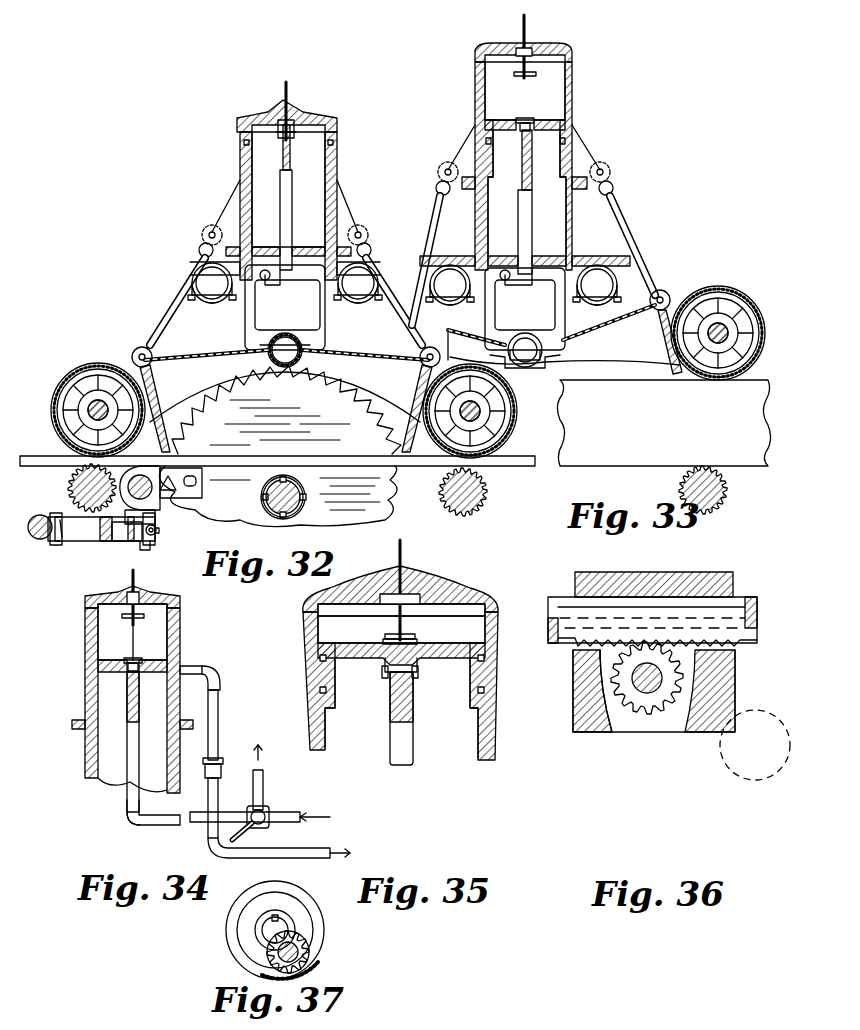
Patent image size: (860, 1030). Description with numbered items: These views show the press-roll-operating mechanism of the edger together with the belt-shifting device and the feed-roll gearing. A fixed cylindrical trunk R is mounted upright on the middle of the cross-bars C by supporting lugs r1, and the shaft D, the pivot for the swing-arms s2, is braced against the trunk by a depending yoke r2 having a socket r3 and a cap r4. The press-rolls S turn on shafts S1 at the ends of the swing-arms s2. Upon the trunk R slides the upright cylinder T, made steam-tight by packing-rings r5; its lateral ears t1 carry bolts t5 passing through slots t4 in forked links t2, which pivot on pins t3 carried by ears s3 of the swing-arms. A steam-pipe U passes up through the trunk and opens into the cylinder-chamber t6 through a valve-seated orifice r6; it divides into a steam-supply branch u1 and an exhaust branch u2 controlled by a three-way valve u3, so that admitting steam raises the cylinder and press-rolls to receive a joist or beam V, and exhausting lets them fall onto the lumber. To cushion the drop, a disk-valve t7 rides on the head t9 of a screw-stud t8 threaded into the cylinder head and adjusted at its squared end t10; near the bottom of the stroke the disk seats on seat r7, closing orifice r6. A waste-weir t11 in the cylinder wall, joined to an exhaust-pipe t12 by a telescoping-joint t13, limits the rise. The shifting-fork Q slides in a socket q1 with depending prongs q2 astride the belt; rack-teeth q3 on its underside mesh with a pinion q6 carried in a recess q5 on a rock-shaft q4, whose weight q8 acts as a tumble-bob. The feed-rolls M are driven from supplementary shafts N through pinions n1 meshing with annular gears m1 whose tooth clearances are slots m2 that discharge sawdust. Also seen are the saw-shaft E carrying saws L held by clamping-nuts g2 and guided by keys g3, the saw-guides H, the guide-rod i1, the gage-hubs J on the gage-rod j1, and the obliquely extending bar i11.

In FIG. 32, the upright cylinder T is at (332, 150).
In FIG. 33, the upright cylinder T is at (570, 98).
In FIG. 35, the upright cylinder T is at (462, 590).
In FIG. 32, the cylindrical trunk R is at (250, 228).
In FIG. 33, the cylindrical trunk R is at (532, 222).
In FIG. 35, the cylindrical trunk R is at (476, 748).
In FIG. 32, the steam-pipe U is at (292, 194).
In FIG. 33, the steam-pipe U is at (518, 195).
In FIG. 34, the steam-pipe U is at (128, 748).
In FIG. 35, the steam-pipe U is at (412, 740).
In FIG. 32, the screw-stud t8 is at (290, 96).
In FIG. 33, the screw-stud t8 is at (530, 40).
In FIG. 34, the screw-stud t8 is at (138, 586).
In FIG. 35, the screw-stud t8 is at (396, 556).
In FIG. 32, the disk-valve t7 is at (275, 115).
In FIG. 33, the disk-valve t7 is at (516, 75).
In FIG. 34, the disk-valve t7 is at (142, 616).
In FIG. 35, the disk-valve t7 is at (380, 642).
In FIG. 33, the squared end t10 is at (522, 30).
In FIG. 34, the squared end t10 is at (130, 575).
In FIG. 33, the cylinder-chamber t6 is at (555, 82).
In FIG. 34, the cylinder-chamber t6 is at (165, 645).
In FIG. 35, the cylinder-chamber t6 is at (478, 630).
In FIG. 34, the head of the stud t9 is at (130, 622).
In FIG. 35, the head of the stud t9 is at (386, 665).
In FIG. 32, the packing-rings r5 is at (243, 140).
In FIG. 33, the packing-rings r5 is at (482, 140).
In FIG. 35, the packing-rings r5 is at (485, 690).
In FIG. 33, the seat r7 is at (518, 122).
In FIG. 34, the seat r7 is at (126, 660).
In FIG. 33, the valve-seated orifice r6 is at (527, 118).
In FIG. 34, the valve-seated orifice r6 is at (135, 665).
In FIG. 35, the valve-seated orifice r6 is at (412, 656).
In FIG. 32, the supporting lugs r1 is at (190, 268).
In FIG. 33, the supporting lugs r1 is at (448, 258).
In FIG. 32, the depending yoke r2 is at (322, 330).
In FIG. 33, the depending yoke r2 is at (486, 326).
In FIG. 32, the socket r3 is at (288, 332).
In FIG. 33, the socket r3 is at (510, 345).
In FIG. 33, the cap r4 is at (538, 368).
In FIG. 32, the lateral ears t1 is at (232, 210).
In FIG. 33, the lateral ears t1 is at (450, 162).
In FIG. 32, the bolts t5 is at (203, 230).
In FIG. 33, the bolts t5 is at (615, 170).
In FIG. 32, the slots t4 is at (200, 248).
In FIG. 33, the slots t4 is at (435, 188).
In FIG. 32, the forked links t2 is at (170, 306).
In FIG. 33, the forked links t2 is at (432, 226).
In FIG. 32, the pins t3 is at (146, 375).
In FIG. 33, the pins t3 is at (663, 295).
In FIG. 34, the waste-weir t11 is at (182, 672).
In FIG. 34, the exhaust-pipe t12 is at (222, 790).
In FIG. 34, the telescoping-joint t13 is at (218, 705).
In FIG. 32, the cross-bars C is at (200, 300).
In FIG. 33, the cross-bars C is at (432, 276).
In FIG. 32, the shaft D is at (285, 350).
In FIG. 33, the shaft D is at (524, 368).
In FIG. 32, the swing-arms s2 is at (190, 363).
In FIG. 33, the swing-arms s2 is at (455, 330).
In FIG. 32, the ears s3 is at (136, 352).
In FIG. 33, the ears s3 is at (670, 303).
In FIG. 32, the press-rolls S is at (90, 362).
In FIG. 33, the press-rolls S is at (752, 298).
In FIG. 32, the shafts S1 is at (88, 410).
In FIG. 33, the shafts S1 is at (735, 337).
In FIG. 32, the saws L is at (388, 435).
In FIG. 32, the feed-rolls M is at (70, 492).
In FIG. 33, the feed-rolls M is at (726, 508).
In FIG. 37, the feed-rolls M is at (285, 920).
In FIG. 32, the guide-rod i1 is at (140, 475).
In FIG. 32, the saw-guides H is at (170, 492).
In FIG. 32, the saw-shaft E is at (302, 508).
In FIG. 32, the keys g3 is at (306, 492).
In FIG. 32, the clamping-nut g2 is at (266, 510).
In FIG. 32, the gage-hubs J is at (58, 542).
In FIG. 32, the gage-rod j1 is at (35, 514).
In FIG. 32, the obliquely extending bar i11 is at (110, 542).
In FIG. 33, the joist or beam V is at (663, 423).
In FIG. 34, the steam-supply branch u1 is at (290, 822).
In FIG. 34, the exhaust-pipe branch u2 is at (262, 786).
In FIG. 34, the three-way valve u3 is at (251, 827).
In FIG. 36, the shifting-fork Q is at (565, 598).
In FIG. 36, the socket q1 is at (735, 585).
In FIG. 36, the depending prongs q2 is at (710, 700).
In FIG. 36, the rack-teeth q3 is at (740, 648).
In FIG. 36, the rock-shaft q4 is at (645, 690).
In FIG. 36, the recess q5 is at (605, 720).
In FIG. 36, the pinion q6 is at (655, 718).
In FIG. 36, the weight q8 is at (735, 782).
In FIG. 37, the annular gears m1 is at (230, 955).
In FIG. 37, the slots m2 is at (312, 962).
In FIG. 37, the pinions n1 is at (305, 932).
In FIG. 37, the supplementary shafts N is at (300, 950).